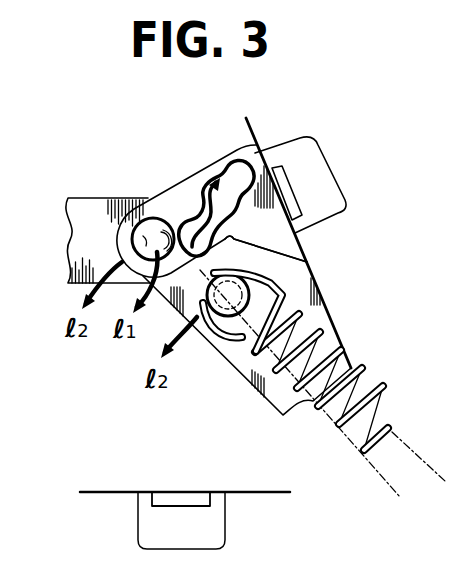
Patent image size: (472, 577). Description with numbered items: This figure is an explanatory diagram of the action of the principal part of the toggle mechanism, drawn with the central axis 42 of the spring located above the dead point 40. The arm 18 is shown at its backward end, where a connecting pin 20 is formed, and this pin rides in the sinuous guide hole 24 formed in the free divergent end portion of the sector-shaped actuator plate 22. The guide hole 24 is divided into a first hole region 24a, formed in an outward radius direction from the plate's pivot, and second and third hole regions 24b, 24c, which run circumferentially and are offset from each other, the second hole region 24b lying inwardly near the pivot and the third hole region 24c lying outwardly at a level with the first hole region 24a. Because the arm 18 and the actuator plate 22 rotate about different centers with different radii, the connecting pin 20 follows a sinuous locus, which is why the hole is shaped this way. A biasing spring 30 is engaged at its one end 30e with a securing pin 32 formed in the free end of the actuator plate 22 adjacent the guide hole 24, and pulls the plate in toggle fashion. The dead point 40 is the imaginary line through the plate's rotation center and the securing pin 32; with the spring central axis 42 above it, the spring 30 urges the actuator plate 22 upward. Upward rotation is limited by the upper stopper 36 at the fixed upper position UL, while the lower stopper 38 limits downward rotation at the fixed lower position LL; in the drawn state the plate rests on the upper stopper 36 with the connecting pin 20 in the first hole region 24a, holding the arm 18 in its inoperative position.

The arm 18 is at (100, 195).
The connecting pin 20 is at (146, 232).
The actuator plate 22 is at (320, 312).
The sinuous guide hole 24 is at (243, 227).
The first hole region 24a is at (151, 235).
The second hole region 24b is at (308, 262).
The third hole region 24c is at (222, 172).
The biasing spring 30 is at (378, 388).
The one end of spring 30e is at (322, 298).
The securing pin 32 is at (235, 320).
The upper stopper 36 is at (288, 192).
The lower stopper 38 is at (178, 500).
The dead point 40 is at (380, 476).
The central axis of spring 42 is at (422, 465).
The fixed upper position UL is at (249, 131).
The fixed lower position LL is at (104, 492).